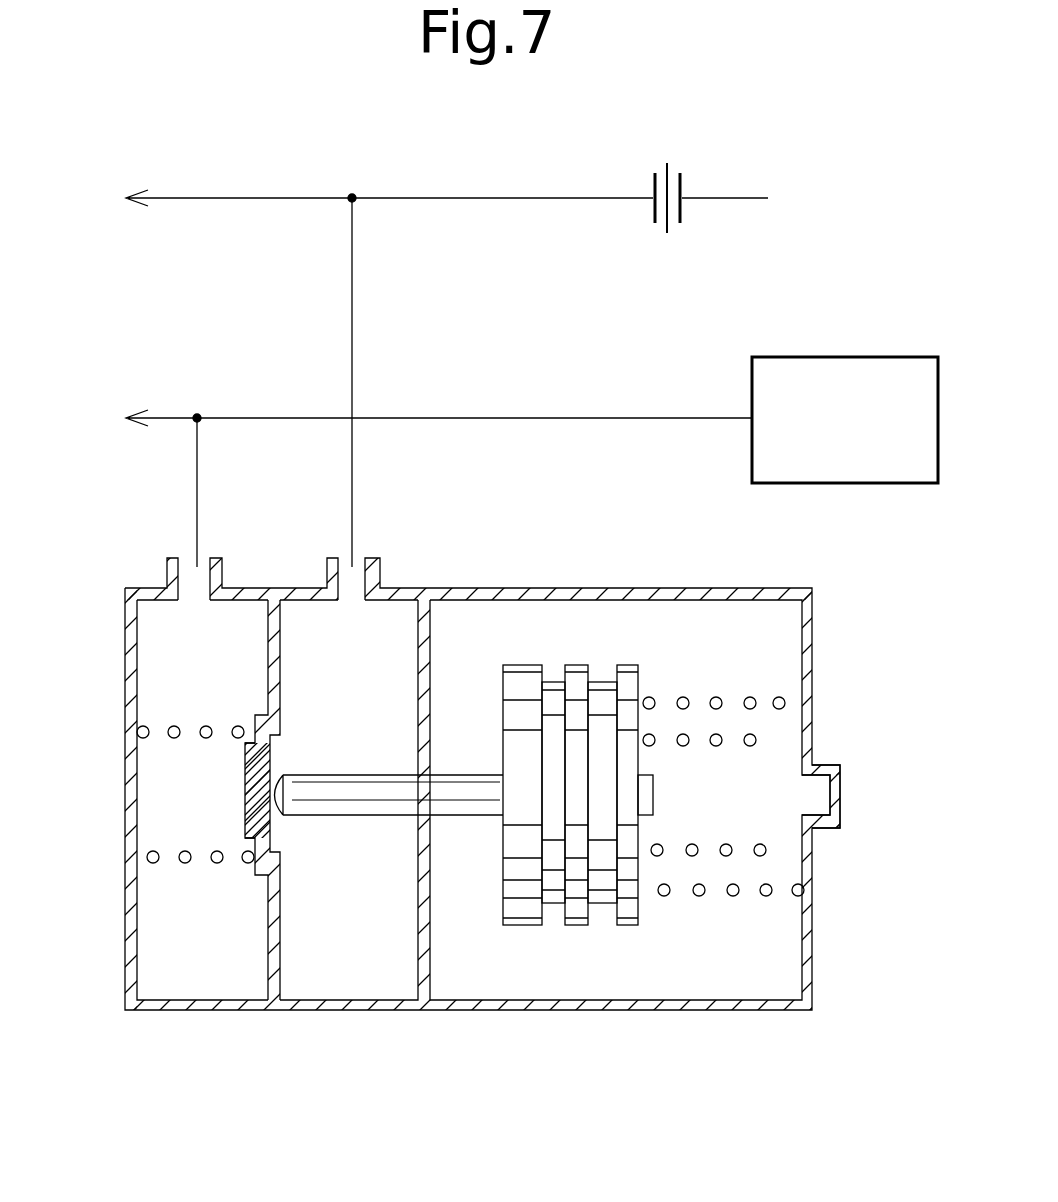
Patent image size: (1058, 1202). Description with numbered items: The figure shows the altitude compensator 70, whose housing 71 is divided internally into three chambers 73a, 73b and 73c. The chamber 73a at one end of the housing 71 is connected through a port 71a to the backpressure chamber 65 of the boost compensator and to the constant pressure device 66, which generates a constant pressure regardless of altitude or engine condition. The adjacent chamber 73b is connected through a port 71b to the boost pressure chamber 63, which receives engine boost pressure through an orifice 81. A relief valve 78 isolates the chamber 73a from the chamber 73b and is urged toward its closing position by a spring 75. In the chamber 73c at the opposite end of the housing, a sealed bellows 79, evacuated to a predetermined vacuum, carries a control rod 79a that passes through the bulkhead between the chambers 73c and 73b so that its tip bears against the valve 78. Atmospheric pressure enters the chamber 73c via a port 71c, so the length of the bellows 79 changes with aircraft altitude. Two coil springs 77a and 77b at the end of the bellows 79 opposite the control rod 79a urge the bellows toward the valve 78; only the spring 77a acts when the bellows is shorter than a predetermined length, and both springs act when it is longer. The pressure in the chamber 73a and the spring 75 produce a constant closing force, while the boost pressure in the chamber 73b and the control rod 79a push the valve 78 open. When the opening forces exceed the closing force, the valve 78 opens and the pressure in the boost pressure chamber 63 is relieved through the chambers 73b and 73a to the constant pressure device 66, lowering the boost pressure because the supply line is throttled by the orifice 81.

The boost pressure chamber 63 is at (222, 200).
The backpressure chamber 65 is at (420, 420).
The constant pressure device 66 is at (770, 483).
The altitude compensator 70 is at (523, 1018).
The housing 71 is at (812, 630).
The port 71a is at (200, 560).
The port 71b is at (358, 560).
The port 71c is at (822, 797).
The chamber 73a is at (226, 647).
The chamber 73b is at (376, 647).
The chamber 73c is at (636, 647).
The spring 75 is at (186, 863).
The coil spring 77a is at (768, 896).
The coil spring 77b is at (766, 850).
The relief valve 78 is at (272, 752).
The sealed bellows 79 is at (508, 905).
The control rod 79a is at (352, 806).
The orifice 81 is at (678, 165).